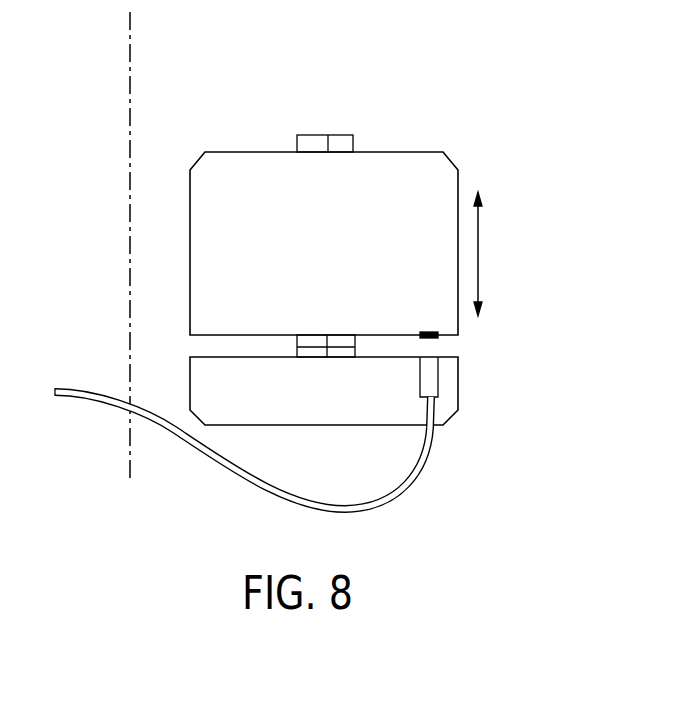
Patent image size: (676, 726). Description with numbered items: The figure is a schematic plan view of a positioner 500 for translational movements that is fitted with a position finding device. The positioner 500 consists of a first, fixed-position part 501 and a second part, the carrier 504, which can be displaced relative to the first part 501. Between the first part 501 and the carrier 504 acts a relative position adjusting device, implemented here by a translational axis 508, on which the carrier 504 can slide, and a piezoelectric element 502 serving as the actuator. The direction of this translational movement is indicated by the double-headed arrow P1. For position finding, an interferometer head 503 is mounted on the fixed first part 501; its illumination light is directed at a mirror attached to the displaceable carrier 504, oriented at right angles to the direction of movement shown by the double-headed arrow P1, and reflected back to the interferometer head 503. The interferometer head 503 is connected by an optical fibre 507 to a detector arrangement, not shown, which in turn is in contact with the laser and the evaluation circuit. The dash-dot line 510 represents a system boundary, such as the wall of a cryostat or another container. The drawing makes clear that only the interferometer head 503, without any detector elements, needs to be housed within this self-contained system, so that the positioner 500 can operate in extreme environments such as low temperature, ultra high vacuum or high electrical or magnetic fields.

The positioner 500 is at (405, 79).
The first part 501 is at (330, 410).
The piezoelectric element 502 is at (298, 352).
The interferometer head 503 is at (438, 377).
The carrier 504 is at (338, 236).
The optical fibre 507 is at (59, 397).
The translational axis 508 is at (354, 140).
The dash-dot line 510 is at (131, 117).
The double-headed arrow P1 is at (478, 258).